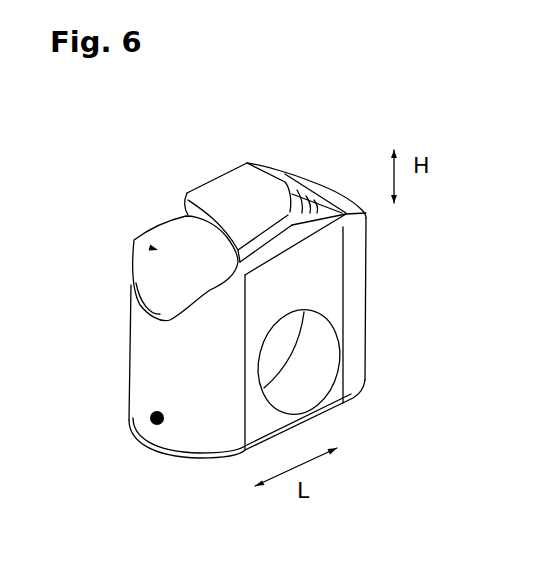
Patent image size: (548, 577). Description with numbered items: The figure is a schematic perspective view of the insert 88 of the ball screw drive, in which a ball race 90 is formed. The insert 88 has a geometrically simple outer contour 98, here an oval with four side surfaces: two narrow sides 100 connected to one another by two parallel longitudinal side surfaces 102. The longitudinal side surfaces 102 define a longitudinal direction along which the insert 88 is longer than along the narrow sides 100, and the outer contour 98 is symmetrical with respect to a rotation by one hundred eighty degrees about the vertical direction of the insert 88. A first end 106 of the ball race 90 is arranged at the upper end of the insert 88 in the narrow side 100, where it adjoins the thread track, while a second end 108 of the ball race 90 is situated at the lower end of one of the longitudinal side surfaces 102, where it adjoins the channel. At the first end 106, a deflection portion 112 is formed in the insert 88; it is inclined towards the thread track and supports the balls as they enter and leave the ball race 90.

The insert 88 is at (97, 129).
The ball race 90 is at (150, 248).
The outer contour 98 is at (152, 423).
The narrow sides 100 is at (187, 435).
The longitudinal side surfaces 102 is at (324, 271).
The first end 106 is at (150, 277).
The second end 108 is at (317, 377).
The deflection portion 112 is at (188, 198).